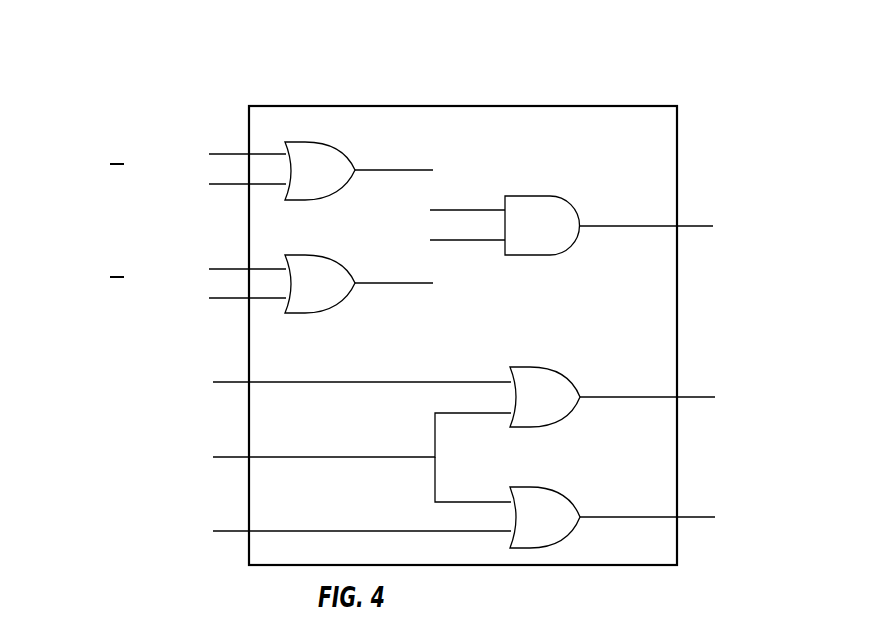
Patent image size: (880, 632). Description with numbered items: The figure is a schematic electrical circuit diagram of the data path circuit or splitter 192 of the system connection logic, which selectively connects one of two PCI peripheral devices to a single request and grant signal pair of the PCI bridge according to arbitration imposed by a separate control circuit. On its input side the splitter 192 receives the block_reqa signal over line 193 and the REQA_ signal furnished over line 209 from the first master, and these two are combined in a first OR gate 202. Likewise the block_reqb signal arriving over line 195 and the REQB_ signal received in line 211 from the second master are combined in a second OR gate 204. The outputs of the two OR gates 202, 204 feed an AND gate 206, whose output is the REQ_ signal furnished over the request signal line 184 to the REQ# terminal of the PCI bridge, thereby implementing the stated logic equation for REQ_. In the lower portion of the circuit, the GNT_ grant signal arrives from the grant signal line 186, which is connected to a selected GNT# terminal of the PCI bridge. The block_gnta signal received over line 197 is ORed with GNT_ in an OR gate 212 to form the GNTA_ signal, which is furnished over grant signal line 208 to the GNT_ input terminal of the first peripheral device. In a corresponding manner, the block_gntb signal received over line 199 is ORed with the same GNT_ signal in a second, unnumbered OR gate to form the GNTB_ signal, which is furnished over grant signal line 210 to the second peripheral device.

The data path circuit 192 is at (670, 58).
The line 193 is at (168, 143).
The line 209 is at (189, 191).
The line 195 is at (168, 258).
The line 211 is at (189, 305).
The first OR gate 202 is at (359, 157).
The second OR gate 204 is at (359, 270).
The AND gate 206 is at (533, 213).
The request signal line 184 is at (687, 208).
The line 197 is at (273, 373).
The grant signal line 186 is at (309, 457).
The line 199 is at (280, 523).
The OR gate 212 is at (569, 385).
The grant signal line 208 is at (690, 382).
The grant signal line 210 is at (693, 503).